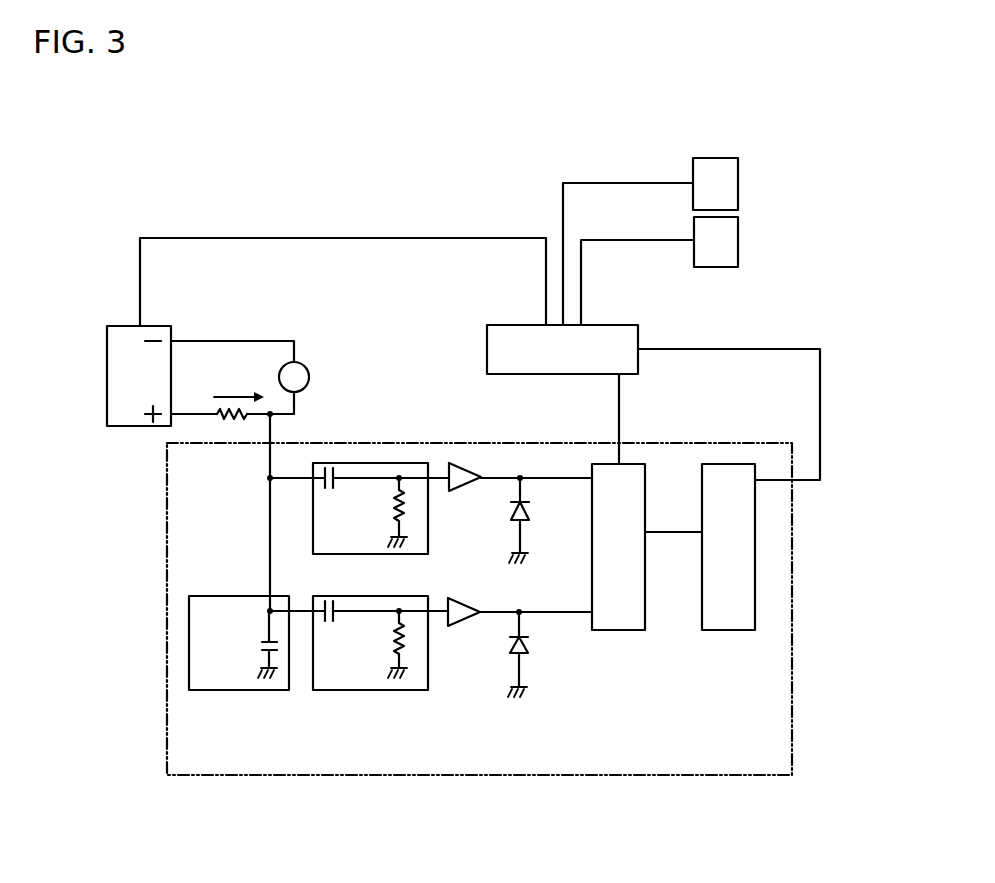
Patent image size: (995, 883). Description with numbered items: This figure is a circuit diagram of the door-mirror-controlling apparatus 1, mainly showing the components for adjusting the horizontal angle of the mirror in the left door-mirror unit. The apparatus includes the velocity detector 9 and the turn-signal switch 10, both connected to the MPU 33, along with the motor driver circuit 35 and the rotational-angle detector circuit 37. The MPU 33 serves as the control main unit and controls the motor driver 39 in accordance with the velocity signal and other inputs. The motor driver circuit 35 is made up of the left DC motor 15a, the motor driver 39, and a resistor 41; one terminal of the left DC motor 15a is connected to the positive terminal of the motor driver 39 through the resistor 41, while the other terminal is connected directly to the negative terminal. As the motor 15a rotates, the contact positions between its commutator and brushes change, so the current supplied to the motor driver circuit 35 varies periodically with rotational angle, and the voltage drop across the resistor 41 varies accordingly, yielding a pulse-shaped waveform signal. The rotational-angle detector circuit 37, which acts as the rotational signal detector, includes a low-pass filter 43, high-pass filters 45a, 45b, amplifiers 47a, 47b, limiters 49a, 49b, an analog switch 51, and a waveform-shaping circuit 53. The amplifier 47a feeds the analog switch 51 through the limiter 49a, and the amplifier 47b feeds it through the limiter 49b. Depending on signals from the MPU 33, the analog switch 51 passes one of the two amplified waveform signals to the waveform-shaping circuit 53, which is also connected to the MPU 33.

The door-mirror-controlling apparatus 1 is at (181, 175).
The velocity detector 9 is at (738, 175).
The turn-signal switch 10 is at (738, 237).
The left DC motor 15a is at (309, 377).
The MPU 33 is at (497, 324).
The motor driver circuit 35 is at (221, 333).
The rotational-angle detector circuit 37 is at (166, 668).
The motor driver 39 is at (121, 325).
The resistor 41 is at (217, 414).
The low-pass filter 43 is at (232, 690).
The high-pass filter 45a is at (363, 554).
The high-pass filter 45b is at (345, 690).
The amplifier 47a is at (468, 491).
The amplifier 47b is at (467, 626).
The limiter 49a is at (538, 511).
The limiter 49b is at (533, 662).
The analog switch 51 is at (630, 630).
The waveform-shaping circuit 53 is at (730, 630).